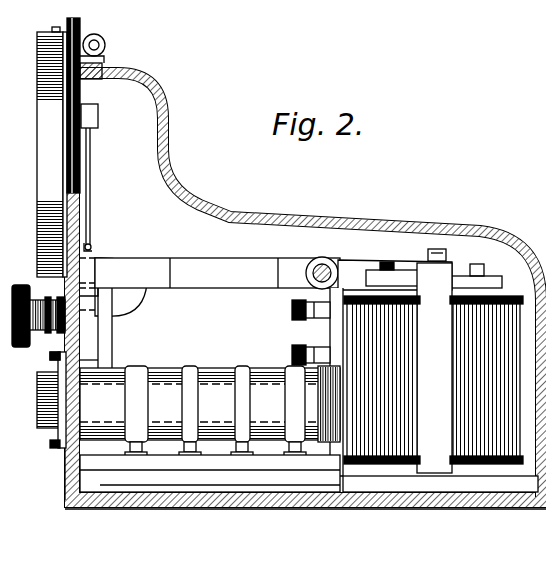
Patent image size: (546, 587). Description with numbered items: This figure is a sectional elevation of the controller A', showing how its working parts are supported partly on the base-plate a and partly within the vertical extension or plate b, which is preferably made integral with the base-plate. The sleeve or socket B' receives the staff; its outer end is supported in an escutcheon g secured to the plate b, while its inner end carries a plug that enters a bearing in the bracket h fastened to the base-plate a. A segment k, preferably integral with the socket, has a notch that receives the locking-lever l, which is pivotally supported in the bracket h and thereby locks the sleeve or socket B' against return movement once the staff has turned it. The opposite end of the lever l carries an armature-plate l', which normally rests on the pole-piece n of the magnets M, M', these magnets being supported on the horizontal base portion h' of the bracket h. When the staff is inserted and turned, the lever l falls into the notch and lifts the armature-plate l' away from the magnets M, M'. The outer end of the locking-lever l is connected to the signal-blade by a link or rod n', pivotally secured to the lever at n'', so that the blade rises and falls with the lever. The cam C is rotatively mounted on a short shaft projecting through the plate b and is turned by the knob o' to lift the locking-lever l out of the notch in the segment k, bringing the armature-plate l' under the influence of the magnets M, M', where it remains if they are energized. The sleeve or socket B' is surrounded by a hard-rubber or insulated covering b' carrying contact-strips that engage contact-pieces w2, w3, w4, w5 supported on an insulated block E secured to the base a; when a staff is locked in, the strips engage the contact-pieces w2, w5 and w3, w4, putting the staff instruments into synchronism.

The controller A' is at (309, 286).
The vertical extension or plate b is at (53, 450).
The base-plate a is at (150, 504).
The link or rod n' is at (100, 174).
The pivot of link to locking-lever n'' is at (113, 239).
The knob o' is at (33, 304).
The cam C is at (100, 334).
The segment k is at (100, 332).
The locking-lever l is at (210, 264).
The armature-plate l' is at (420, 262).
The pole-piece n is at (434, 368).
The bracket h is at (305, 382).
The magnet M is at (382, 380).
The magnet M' is at (486, 380).
The hard-rubber or insulated covering b' is at (210, 394).
The contact-piece w2 is at (136, 411).
The contact-piece w3 is at (190, 411).
The contact-piece w4 is at (242, 411).
The contact-piece w5 is at (295, 411).
The insulated block E is at (272, 468).
The horizontal base portion of bracket h' is at (440, 503).
The sleeve or socket B' is at (34, 400).
The escutcheon g is at (42, 384).